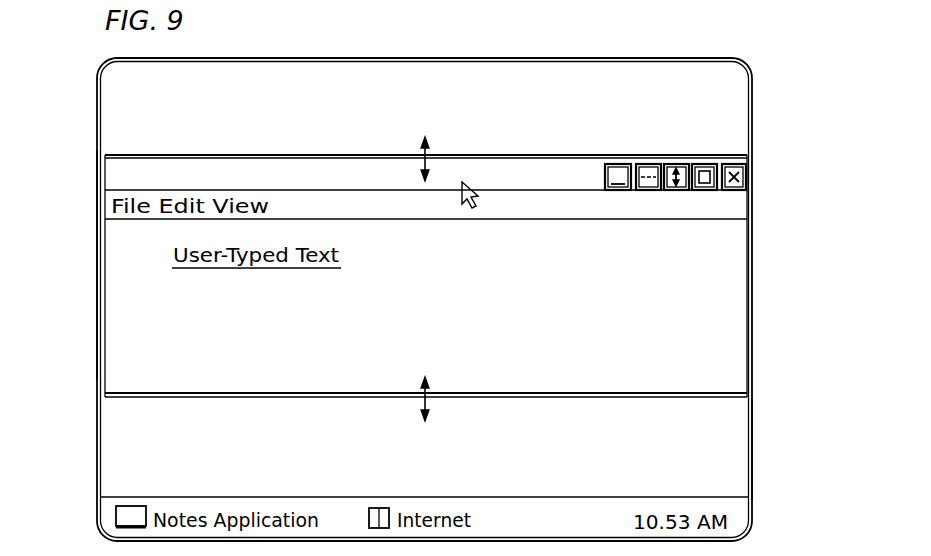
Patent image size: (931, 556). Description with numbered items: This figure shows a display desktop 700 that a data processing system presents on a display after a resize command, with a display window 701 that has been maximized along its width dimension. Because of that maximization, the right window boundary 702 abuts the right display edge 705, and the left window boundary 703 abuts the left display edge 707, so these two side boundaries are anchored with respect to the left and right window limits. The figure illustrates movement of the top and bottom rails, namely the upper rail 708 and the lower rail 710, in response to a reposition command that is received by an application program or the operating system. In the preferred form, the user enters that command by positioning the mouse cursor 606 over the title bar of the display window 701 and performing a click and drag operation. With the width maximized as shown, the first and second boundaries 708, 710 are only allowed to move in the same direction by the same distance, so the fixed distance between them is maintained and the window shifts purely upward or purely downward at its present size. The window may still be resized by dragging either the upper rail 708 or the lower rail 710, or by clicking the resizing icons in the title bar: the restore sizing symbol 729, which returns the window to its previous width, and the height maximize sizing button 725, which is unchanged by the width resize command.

The display desktop 700 is at (533, 58).
The display window 701 is at (358, 155).
The right window boundary 702 is at (747, 280).
The left window boundary 703 is at (102, 300).
The right display edge 705 is at (752, 433).
The left display edge 707 is at (97, 255).
The upper rail 708 is at (481, 156).
The lower rail 710 is at (537, 398).
The height maximize sizing button 725 is at (677, 162).
The restore sizing symbol 729 is at (647, 162).
The mouse cursor 606 is at (472, 208).